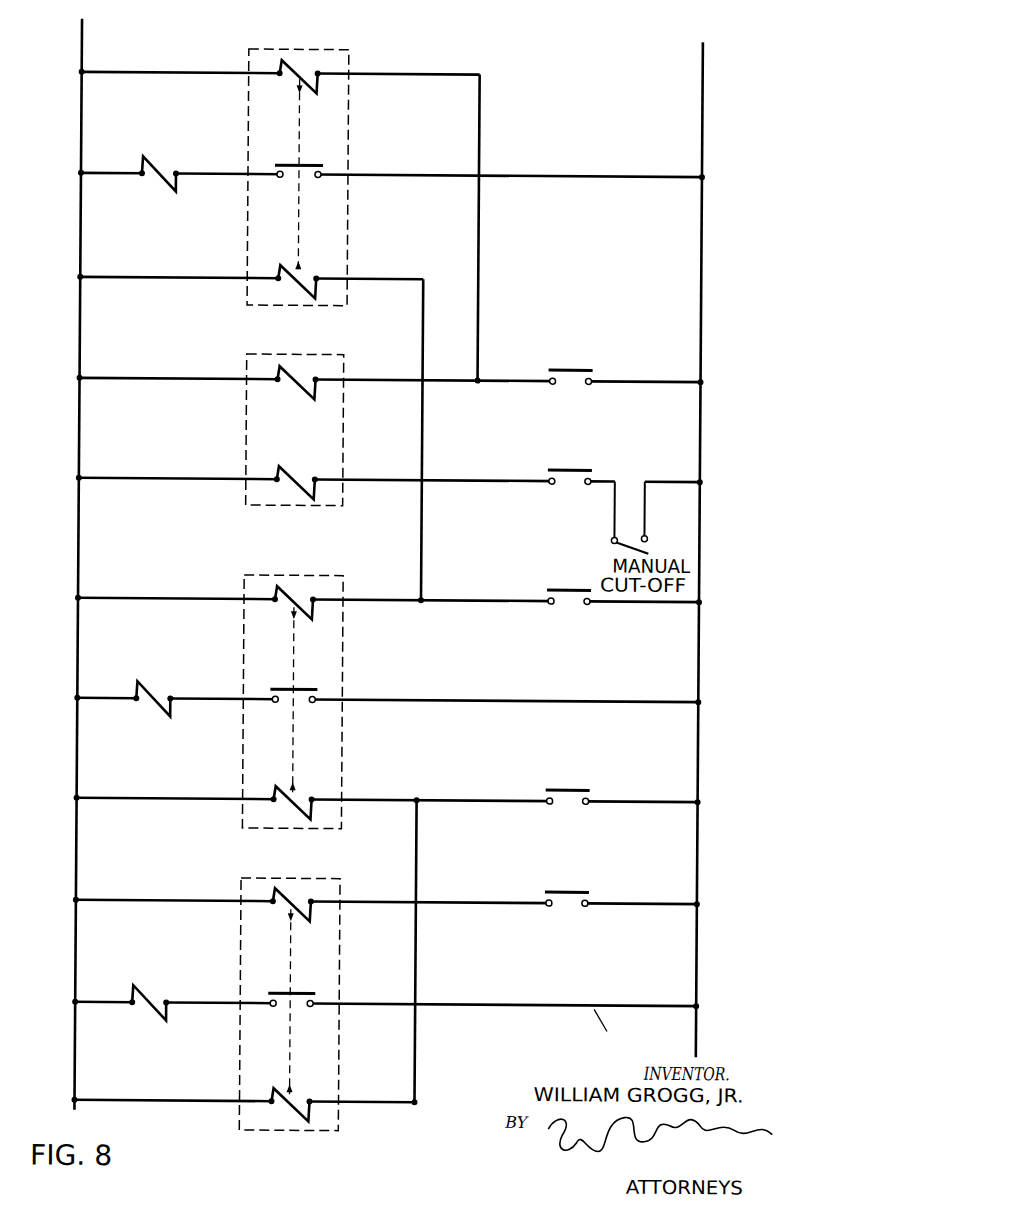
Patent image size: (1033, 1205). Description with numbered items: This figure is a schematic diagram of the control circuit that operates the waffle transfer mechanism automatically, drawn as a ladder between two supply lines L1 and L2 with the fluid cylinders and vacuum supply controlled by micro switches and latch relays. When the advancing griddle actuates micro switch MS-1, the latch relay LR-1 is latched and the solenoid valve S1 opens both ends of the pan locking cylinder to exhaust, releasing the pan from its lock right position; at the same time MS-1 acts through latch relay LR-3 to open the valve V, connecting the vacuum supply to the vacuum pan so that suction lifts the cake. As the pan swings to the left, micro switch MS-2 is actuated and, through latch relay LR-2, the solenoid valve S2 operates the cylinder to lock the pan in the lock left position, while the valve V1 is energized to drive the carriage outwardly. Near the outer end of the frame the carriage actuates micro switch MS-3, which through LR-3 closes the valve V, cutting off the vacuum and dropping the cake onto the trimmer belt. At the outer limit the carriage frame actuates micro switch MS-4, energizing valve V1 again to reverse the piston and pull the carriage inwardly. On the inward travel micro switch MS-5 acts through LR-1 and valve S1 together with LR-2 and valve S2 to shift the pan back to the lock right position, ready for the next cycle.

The power supply line L1 is at (63, 560).
The power supply line L2 is at (714, 541).
The latch relay LR-2 is at (262, 65).
The solenoid valve S2 is at (156, 186).
The valve V1 is at (295, 418).
The micro switch MS-2 is at (584, 367).
The micro switch MS-4 is at (586, 443).
The micro switch MS-5 is at (588, 565).
The latch relay LR-1 is at (260, 586).
The solenoid valve S1 is at (146, 715).
The micro switch MS-1 is at (586, 772).
The micro switch MS-3 is at (586, 873).
The latch relay LR-3 is at (261, 896).
The valve V is at (153, 997).